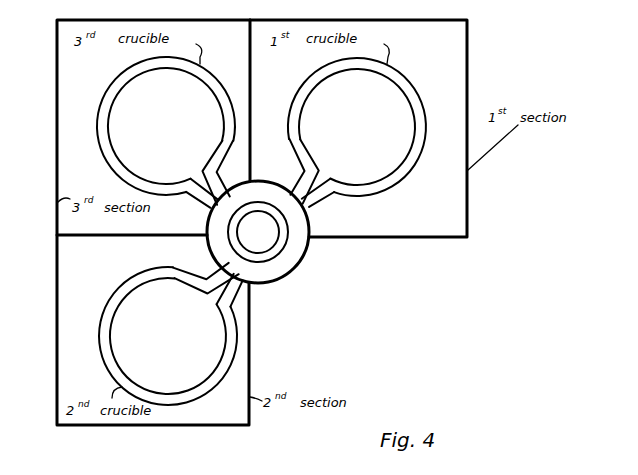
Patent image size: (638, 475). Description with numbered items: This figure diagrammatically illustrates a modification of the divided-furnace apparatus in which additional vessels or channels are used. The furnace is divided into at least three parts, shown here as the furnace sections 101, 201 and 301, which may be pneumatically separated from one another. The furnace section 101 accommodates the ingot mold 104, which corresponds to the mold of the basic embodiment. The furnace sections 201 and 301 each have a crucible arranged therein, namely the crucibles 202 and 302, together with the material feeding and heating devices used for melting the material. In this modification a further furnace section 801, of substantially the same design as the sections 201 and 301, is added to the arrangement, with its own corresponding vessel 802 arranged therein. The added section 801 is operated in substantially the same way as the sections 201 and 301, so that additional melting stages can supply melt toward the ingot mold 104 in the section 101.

The furnace section 801 is at (57, 153).
The third crucible 802 is at (110, 148).
The furnace section 201 is at (468, 210).
The crucible 202 is at (299, 140).
The furnace section 301 is at (250, 374).
The crucible 302 is at (108, 360).
The furnace section 101 is at (305, 254).
The ingot mold 104 is at (274, 258).